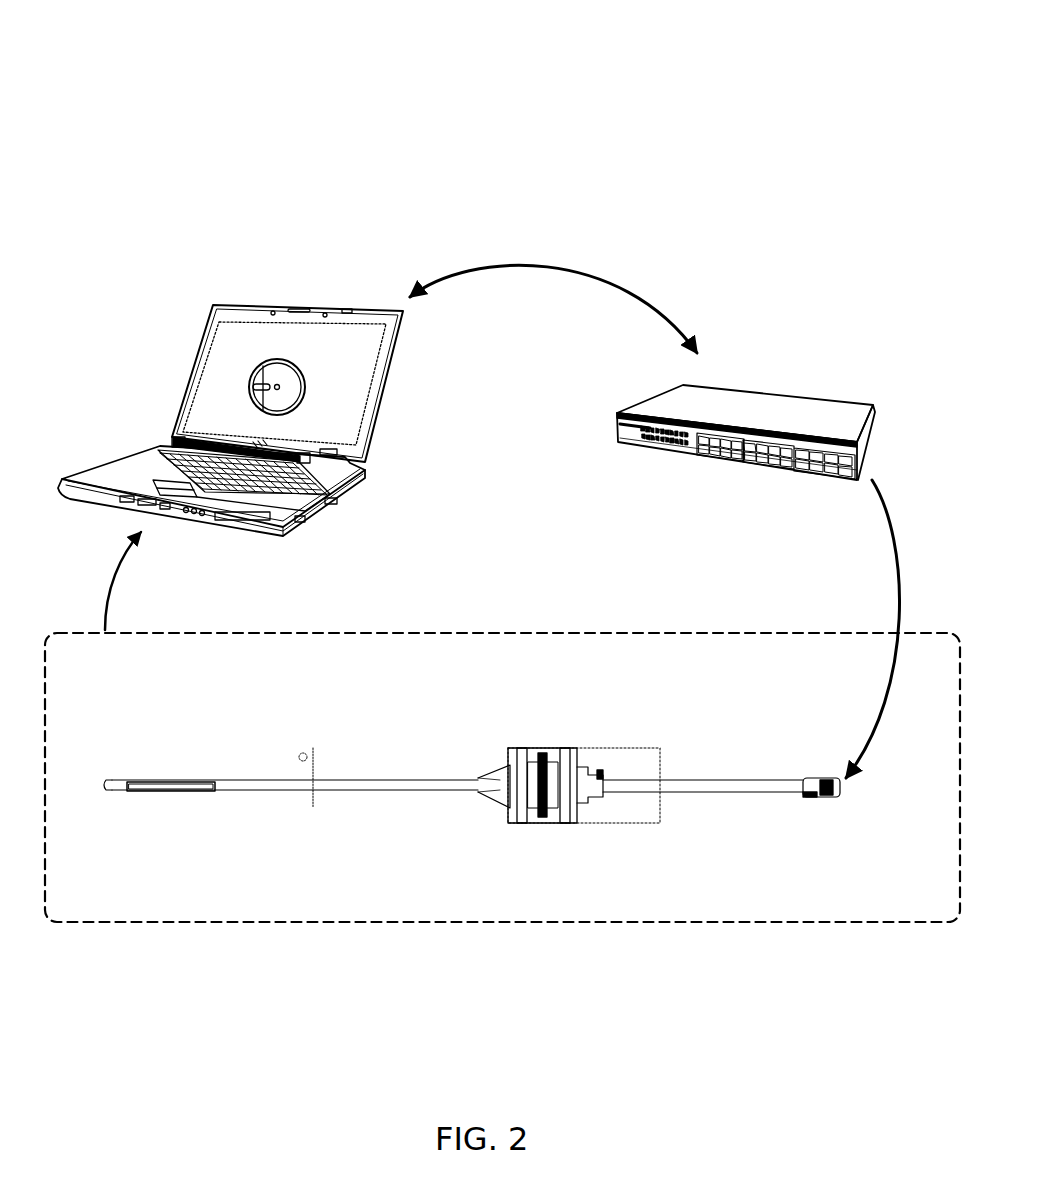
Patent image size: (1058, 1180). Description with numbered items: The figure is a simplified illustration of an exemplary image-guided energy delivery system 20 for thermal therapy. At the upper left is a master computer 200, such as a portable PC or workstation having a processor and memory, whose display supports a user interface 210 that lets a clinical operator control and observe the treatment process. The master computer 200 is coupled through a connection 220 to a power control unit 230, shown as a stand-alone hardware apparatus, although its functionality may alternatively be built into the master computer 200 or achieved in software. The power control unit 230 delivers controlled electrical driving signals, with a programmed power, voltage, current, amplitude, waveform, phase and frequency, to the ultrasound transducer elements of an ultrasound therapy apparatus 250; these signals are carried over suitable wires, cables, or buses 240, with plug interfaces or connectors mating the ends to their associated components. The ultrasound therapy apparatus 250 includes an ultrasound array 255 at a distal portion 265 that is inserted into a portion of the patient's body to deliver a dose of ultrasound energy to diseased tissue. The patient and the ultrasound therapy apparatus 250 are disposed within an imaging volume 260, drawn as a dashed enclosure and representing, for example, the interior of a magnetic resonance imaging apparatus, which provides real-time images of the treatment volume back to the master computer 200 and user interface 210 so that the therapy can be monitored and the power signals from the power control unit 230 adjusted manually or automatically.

The image-guided energy delivery system 20 is at (262, 73).
The master computer 200 is at (155, 398).
The user interface 210 is at (263, 352).
The connection 220 is at (546, 260).
The power control unit 230 is at (775, 392).
The wires, cables, or buses 240 is at (898, 608).
The ultrasound therapy apparatus 250 is at (472, 686).
The ultrasound array 255 is at (165, 798).
The imaging volume 260 is at (561, 630).
The distal portion 265 is at (148, 828).